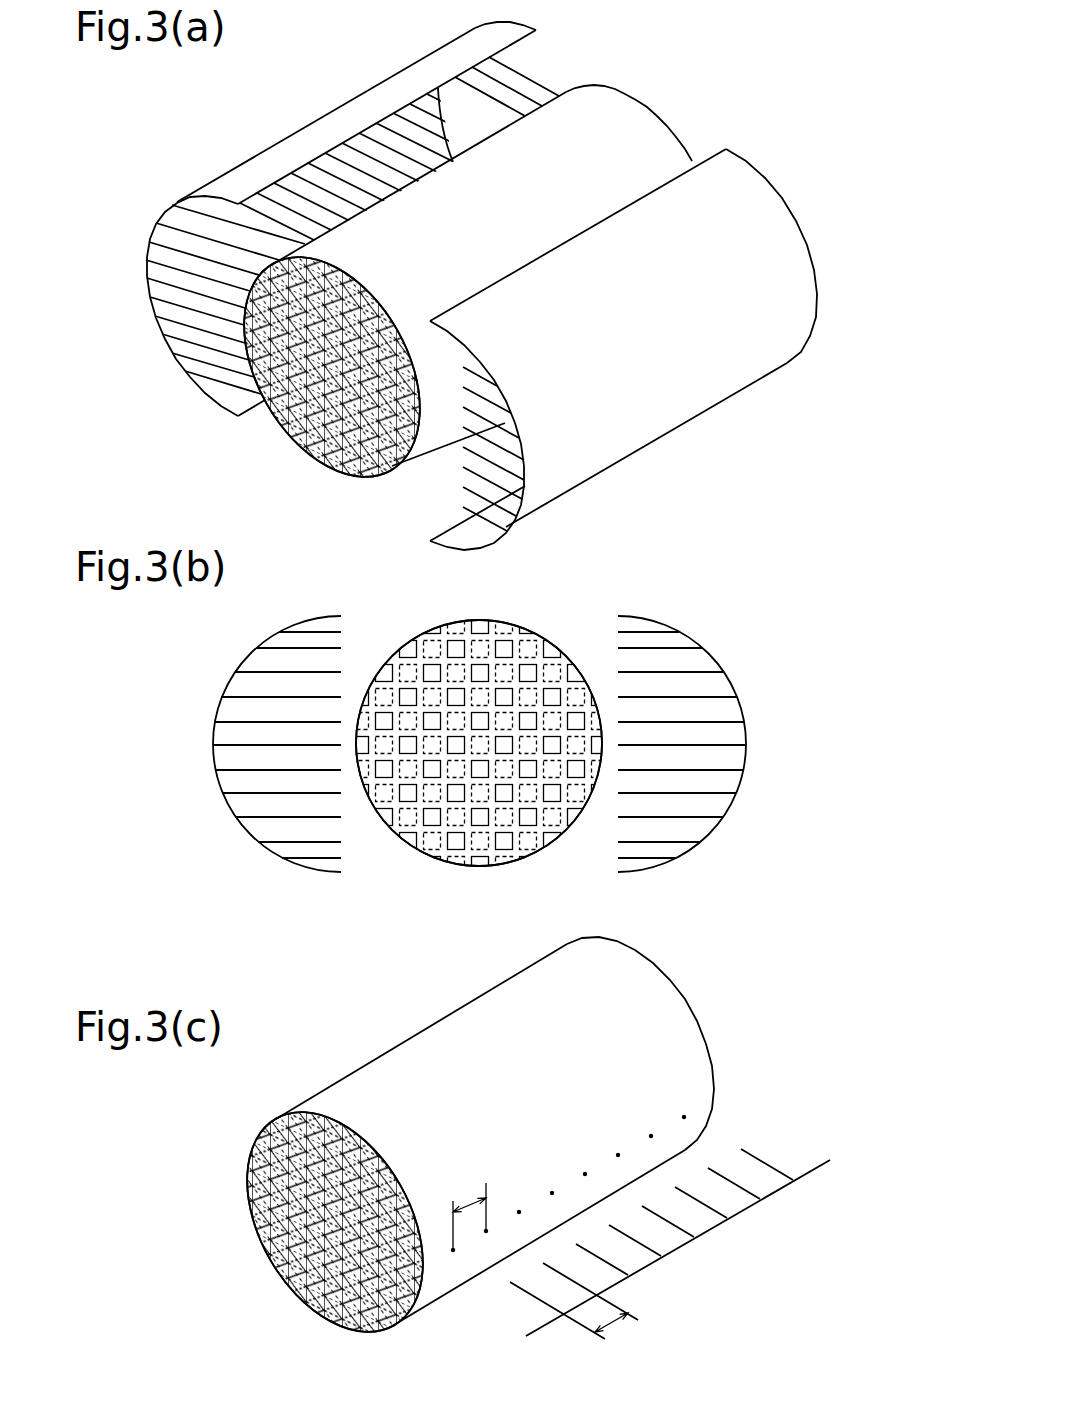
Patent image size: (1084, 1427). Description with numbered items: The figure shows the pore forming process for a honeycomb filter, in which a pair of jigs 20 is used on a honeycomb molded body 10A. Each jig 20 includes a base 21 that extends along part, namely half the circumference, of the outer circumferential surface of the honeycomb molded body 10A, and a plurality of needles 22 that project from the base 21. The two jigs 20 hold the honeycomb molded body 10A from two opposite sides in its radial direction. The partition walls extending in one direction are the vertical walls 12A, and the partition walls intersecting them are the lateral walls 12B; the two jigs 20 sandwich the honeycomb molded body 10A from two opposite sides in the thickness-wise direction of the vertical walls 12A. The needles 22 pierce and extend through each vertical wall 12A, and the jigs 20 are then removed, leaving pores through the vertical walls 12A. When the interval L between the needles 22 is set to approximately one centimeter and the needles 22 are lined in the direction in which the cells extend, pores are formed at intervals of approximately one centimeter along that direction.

In FIG. 3A, the honeycomb molded body 10A is at (446, 289).
In FIG. 3B, the honeycomb molded body 10A is at (480, 746).
In FIG. 3C, the honeycomb molded body 10A is at (470, 1159).
In FIG. 3A, the vertical walls 12A is at (318, 444).
In FIG. 3B, the vertical walls 12A is at (459, 842).
In FIG. 3C, the vertical walls 12A is at (316, 1294).
In FIG. 3A, the lateral walls 12B is at (356, 474).
In FIG. 3B, the lateral walls 12B is at (502, 838).
In FIG. 3C, the lateral walls 12B is at (355, 1326).
In FIG. 3A, the jig 20 is at (481, 298).
In FIG. 3B, the jig 20 is at (479, 752).
In FIG. 3A, the base 21 is at (198, 382).
In FIG. 3B, the base 21 is at (316, 868).
In FIG. 3A, the needles 22 is at (492, 93).
In FIG. 3B, the needles 22 is at (324, 666).
In FIG. 3C, the needles 22 is at (754, 1153).